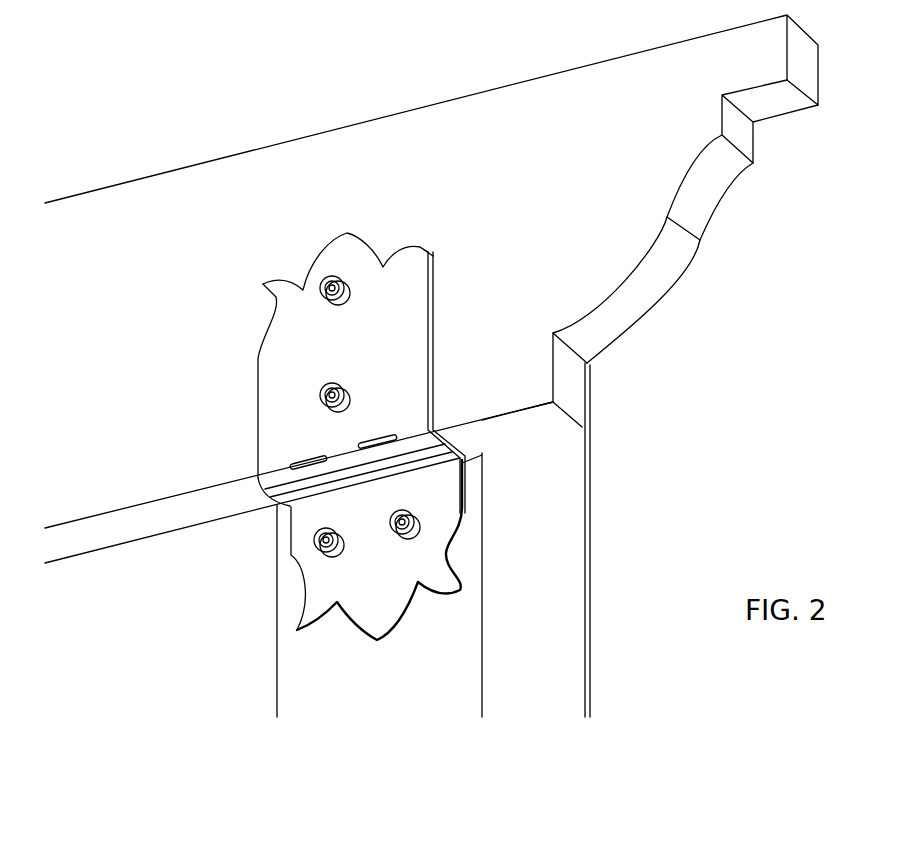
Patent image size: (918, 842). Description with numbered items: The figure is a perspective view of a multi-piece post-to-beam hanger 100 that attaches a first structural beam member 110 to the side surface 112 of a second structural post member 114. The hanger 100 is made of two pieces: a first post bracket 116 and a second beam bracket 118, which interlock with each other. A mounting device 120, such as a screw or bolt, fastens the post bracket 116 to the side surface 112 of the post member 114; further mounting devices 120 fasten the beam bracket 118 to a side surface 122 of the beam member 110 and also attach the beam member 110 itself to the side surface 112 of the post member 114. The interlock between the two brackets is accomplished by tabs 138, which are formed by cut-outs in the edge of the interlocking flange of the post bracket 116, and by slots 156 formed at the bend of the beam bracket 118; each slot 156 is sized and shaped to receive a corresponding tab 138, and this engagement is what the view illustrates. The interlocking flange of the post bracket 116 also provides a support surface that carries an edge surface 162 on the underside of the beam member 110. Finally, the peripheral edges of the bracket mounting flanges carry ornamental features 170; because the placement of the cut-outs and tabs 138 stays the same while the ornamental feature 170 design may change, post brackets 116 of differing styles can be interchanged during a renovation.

The multi-piece post-to-beam hanger 100 is at (369, 446).
The first structural (beam) member 110 is at (680, 313).
The side surface of the post member 112 is at (348, 673).
The second structural (post) member 114 is at (612, 586).
The first (post) bracket 116 is at (350, 585).
The second (beam) bracket 118 is at (283, 368).
The mounting device 120 is at (320, 285).
The side surface of the beam member 122 is at (283, 208).
The tab 138 is at (292, 462).
The slot (aperture) 156 is at (395, 440).
The edge surface on the underside of the beam member 162 is at (492, 442).
The ornamental feature 170 is at (378, 244).